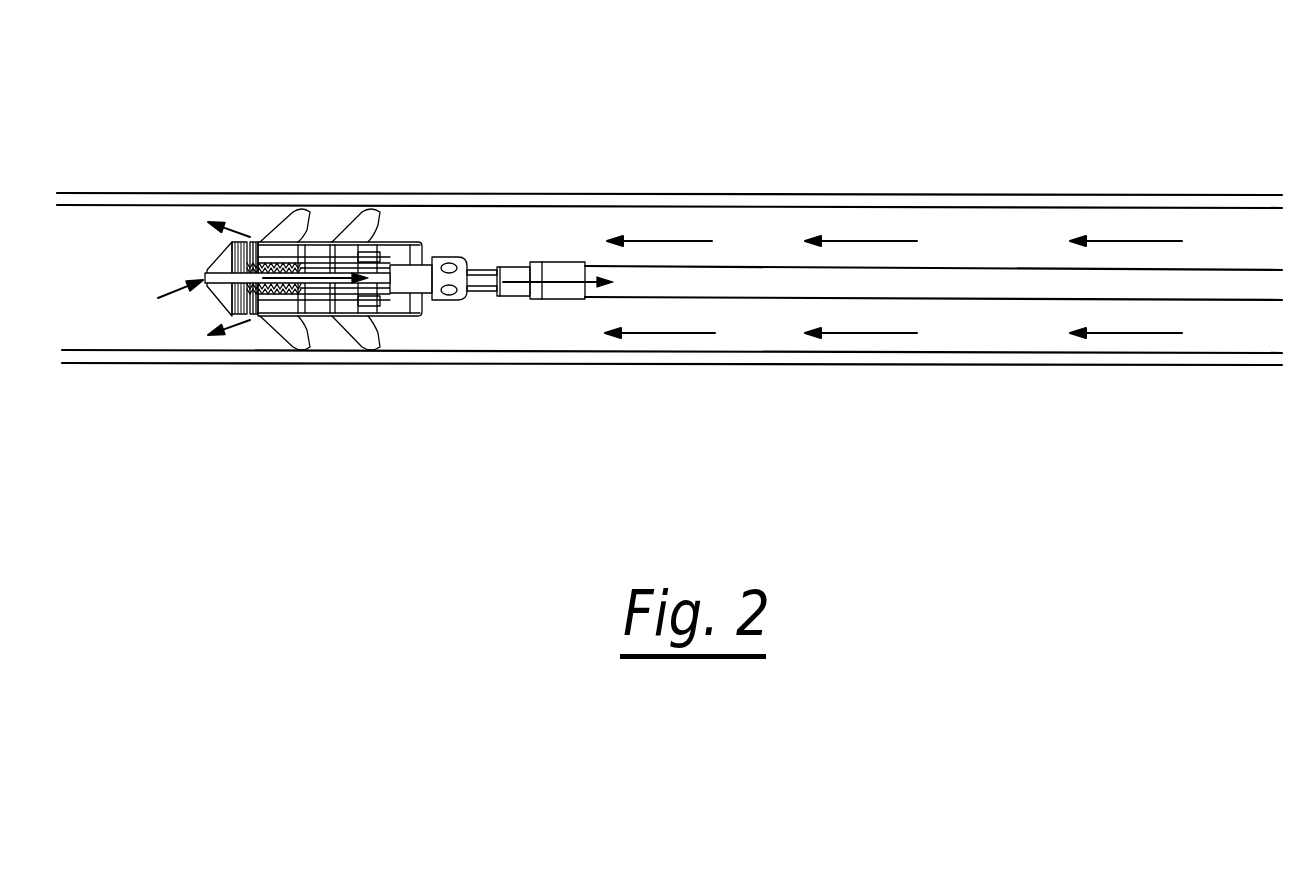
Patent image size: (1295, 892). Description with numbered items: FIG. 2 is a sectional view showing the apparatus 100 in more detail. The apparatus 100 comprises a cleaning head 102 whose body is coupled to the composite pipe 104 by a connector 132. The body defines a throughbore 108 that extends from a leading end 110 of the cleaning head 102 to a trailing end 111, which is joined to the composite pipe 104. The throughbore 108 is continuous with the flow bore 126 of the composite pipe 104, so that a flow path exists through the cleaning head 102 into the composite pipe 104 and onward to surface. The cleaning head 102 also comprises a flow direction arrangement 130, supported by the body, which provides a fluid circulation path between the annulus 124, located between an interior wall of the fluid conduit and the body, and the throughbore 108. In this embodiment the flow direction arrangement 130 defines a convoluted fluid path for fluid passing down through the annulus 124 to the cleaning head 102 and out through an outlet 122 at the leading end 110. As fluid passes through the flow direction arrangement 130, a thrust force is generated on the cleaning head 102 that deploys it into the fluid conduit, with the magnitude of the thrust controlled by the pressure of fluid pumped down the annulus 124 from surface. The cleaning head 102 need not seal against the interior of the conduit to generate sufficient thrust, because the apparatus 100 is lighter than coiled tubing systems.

The apparatus 100 is at (480, 180).
The cleaning head 102 is at (290, 313).
The composite pipe 104 is at (748, 270).
The throughbore 108 is at (377, 282).
The leading end 110 is at (157, 257).
The trailing end 111 is at (549, 328).
The outlet 122 is at (254, 321).
The annulus 124 is at (744, 333).
The flow bore 126 is at (968, 282).
The flow direction arrangement 130 is at (288, 247).
The connector 132 is at (558, 265).